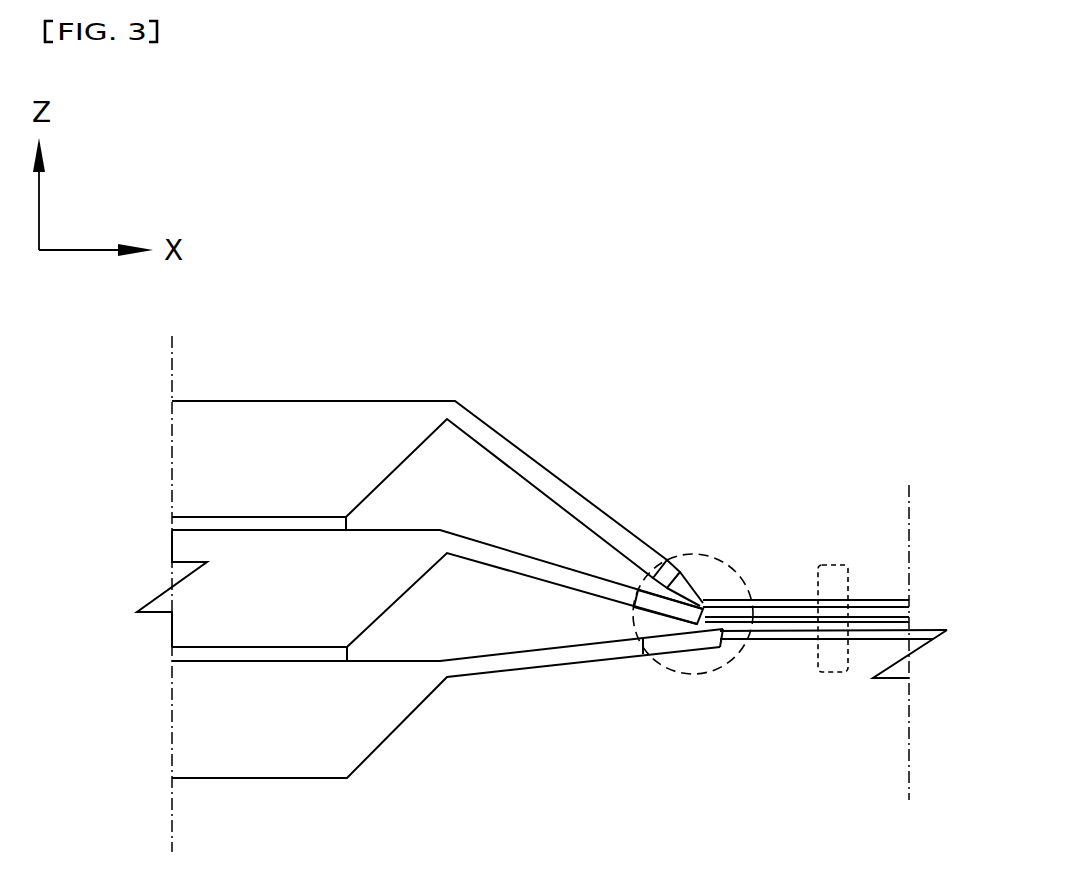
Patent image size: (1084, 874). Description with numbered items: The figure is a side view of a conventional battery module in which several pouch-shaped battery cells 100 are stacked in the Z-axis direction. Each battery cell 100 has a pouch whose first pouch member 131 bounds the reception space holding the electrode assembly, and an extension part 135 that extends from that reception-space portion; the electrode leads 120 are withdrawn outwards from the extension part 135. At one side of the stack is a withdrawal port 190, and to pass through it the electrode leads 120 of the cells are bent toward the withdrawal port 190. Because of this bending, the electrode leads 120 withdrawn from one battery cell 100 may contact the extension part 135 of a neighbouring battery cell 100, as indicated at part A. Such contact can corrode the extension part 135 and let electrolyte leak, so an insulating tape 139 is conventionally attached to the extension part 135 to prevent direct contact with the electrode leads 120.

The battery cell 100 is at (188, 467).
The first pouch member 131 is at (298, 427).
The extension part 135 is at (500, 443).
The insulating tape 139 is at (643, 580).
The electrode lead 120 is at (787, 602).
The withdrawal port 190 is at (833, 662).
The part A is at (695, 553).